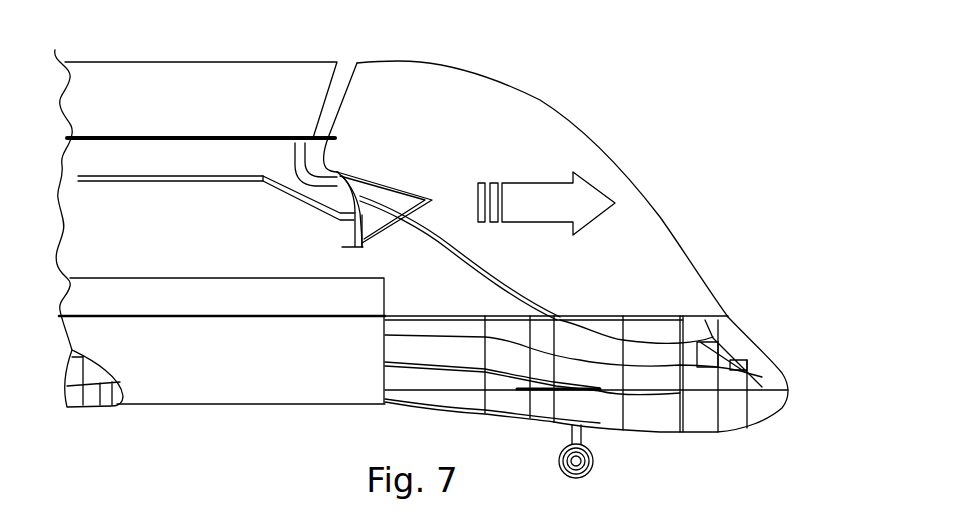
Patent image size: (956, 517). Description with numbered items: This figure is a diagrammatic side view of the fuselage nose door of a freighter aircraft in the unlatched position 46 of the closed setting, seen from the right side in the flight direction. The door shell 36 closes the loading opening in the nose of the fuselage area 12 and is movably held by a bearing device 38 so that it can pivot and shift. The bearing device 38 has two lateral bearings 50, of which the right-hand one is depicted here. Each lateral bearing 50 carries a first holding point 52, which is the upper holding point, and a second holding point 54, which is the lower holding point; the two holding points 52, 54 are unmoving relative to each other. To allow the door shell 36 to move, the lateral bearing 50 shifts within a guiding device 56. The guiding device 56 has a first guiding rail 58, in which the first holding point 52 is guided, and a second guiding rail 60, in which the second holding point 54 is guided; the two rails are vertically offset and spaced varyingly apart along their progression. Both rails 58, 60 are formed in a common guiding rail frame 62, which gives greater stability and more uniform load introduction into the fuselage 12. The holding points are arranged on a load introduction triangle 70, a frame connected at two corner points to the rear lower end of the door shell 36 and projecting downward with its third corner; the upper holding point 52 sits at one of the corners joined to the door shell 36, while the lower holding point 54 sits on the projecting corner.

The fuselage area 12 is at (312, 77).
The door shell 36 is at (525, 112).
The bearing device 38 is at (258, 196).
The unlatched position 46 is at (713, 313).
The lateral bearing 50 is at (316, 239).
The first holding point 52 is at (338, 170).
The second holding point 54 is at (363, 247).
The guiding device 56 is at (184, 126).
The first guiding rail 58 is at (153, 137).
The second guiding rail 60 is at (153, 182).
The guiding rail frame 62 is at (237, 157).
The load introduction triangle 70 is at (418, 188).